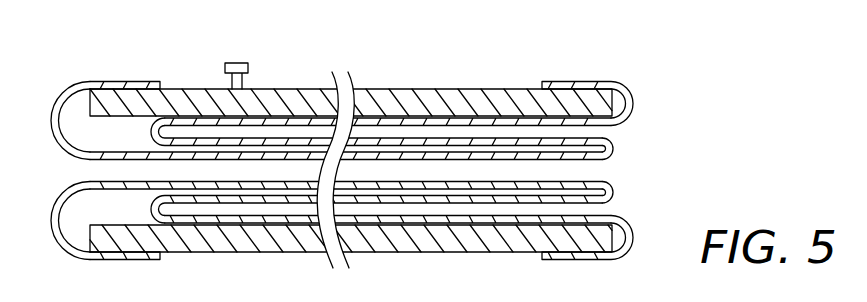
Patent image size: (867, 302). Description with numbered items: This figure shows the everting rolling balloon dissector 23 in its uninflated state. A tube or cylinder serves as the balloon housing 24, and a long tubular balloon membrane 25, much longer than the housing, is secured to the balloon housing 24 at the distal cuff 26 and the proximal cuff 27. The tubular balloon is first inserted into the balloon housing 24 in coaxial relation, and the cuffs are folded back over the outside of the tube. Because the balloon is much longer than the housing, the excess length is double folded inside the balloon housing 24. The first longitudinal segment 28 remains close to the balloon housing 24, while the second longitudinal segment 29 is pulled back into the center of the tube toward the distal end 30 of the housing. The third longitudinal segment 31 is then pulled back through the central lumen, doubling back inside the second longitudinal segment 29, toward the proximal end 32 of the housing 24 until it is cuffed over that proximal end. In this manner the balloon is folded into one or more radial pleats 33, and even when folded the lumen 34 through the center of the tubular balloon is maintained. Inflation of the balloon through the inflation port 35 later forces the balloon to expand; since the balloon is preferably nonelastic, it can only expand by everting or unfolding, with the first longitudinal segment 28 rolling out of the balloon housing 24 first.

The everting rolling balloon dissector 23 is at (337, 63).
The balloon housing 24 is at (282, 89).
The tubular balloon membrane 25 is at (61, 97).
The distal cuff 26 is at (575, 82).
The proximal cuff 27 is at (115, 82).
The first longitudinal segment 28 is at (388, 117).
The second longitudinal segment 29 is at (427, 144).
The distal end 30 is at (568, 250).
The third longitudinal segment 31 is at (456, 157).
The proximal end 32 is at (108, 243).
The radial pleats 33 is at (616, 155).
The lumen 34 is at (596, 177).
The inflation port 35 is at (238, 62).